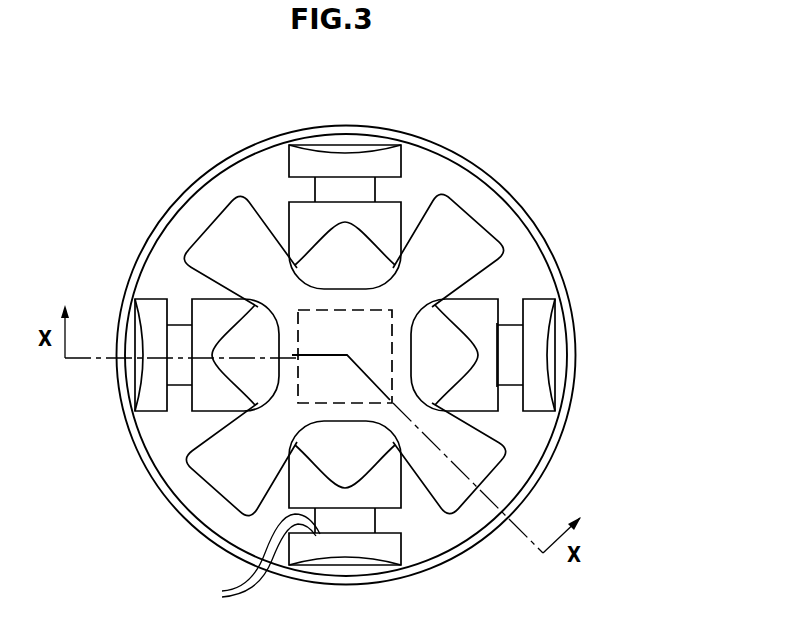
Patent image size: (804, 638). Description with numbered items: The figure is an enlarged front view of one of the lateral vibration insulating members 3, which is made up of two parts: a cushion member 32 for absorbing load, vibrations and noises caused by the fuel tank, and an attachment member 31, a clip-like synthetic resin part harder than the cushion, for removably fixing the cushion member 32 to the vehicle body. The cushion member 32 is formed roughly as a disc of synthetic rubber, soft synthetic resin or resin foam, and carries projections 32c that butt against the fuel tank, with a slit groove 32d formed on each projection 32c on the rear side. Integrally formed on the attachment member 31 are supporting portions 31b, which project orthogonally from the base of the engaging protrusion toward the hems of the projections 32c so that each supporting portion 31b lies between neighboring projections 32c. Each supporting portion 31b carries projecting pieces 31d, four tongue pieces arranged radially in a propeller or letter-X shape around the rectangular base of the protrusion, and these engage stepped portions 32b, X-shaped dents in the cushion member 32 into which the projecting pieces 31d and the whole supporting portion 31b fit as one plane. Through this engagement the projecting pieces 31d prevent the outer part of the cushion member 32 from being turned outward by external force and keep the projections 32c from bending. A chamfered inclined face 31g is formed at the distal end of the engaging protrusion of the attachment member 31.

The lateral vibration insulating member 3 is at (655, 193).
The attachment member 31 is at (495, 230).
The cushion member 32 is at (560, 261).
The supporting portion 31b is at (487, 462).
The projecting piece 31d is at (343, 430).
The chamfered inclined face 31g is at (352, 300).
The stepped portion 32b is at (483, 446).
The projection 32c is at (218, 310).
The slit groove 32d is at (347, 187).